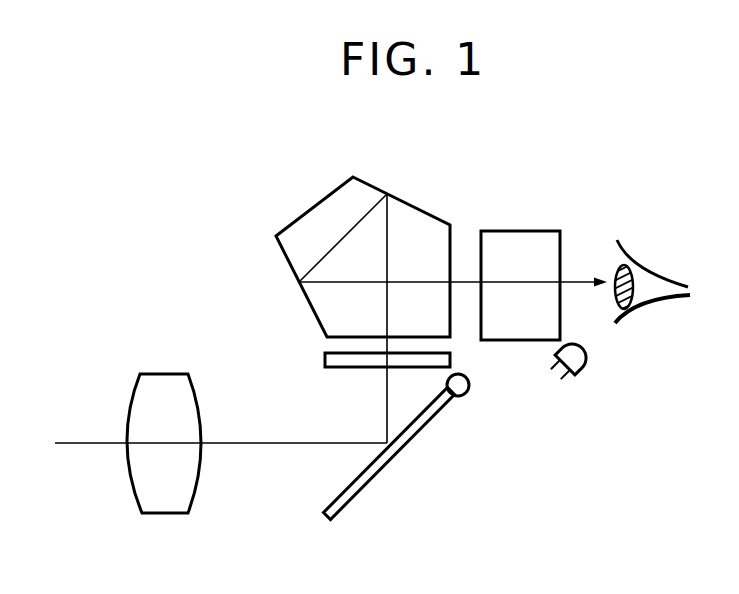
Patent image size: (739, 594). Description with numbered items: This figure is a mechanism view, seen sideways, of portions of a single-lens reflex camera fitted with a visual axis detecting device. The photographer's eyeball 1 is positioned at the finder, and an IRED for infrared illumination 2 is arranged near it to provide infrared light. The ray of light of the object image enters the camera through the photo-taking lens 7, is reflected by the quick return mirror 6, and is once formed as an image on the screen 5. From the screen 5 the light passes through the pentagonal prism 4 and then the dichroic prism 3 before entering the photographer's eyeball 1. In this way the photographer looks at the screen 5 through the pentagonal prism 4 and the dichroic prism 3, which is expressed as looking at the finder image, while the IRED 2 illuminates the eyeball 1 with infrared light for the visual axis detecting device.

The photographer's eyeball 1 is at (650, 266).
The IRED for infrared illumination 2 is at (588, 370).
The dichroic prism 3 is at (527, 231).
The pentagonal prism 4 is at (437, 218).
The screen 5 is at (323, 357).
The quick return mirror 6 is at (435, 418).
The photo-taking lens 7 is at (192, 382).